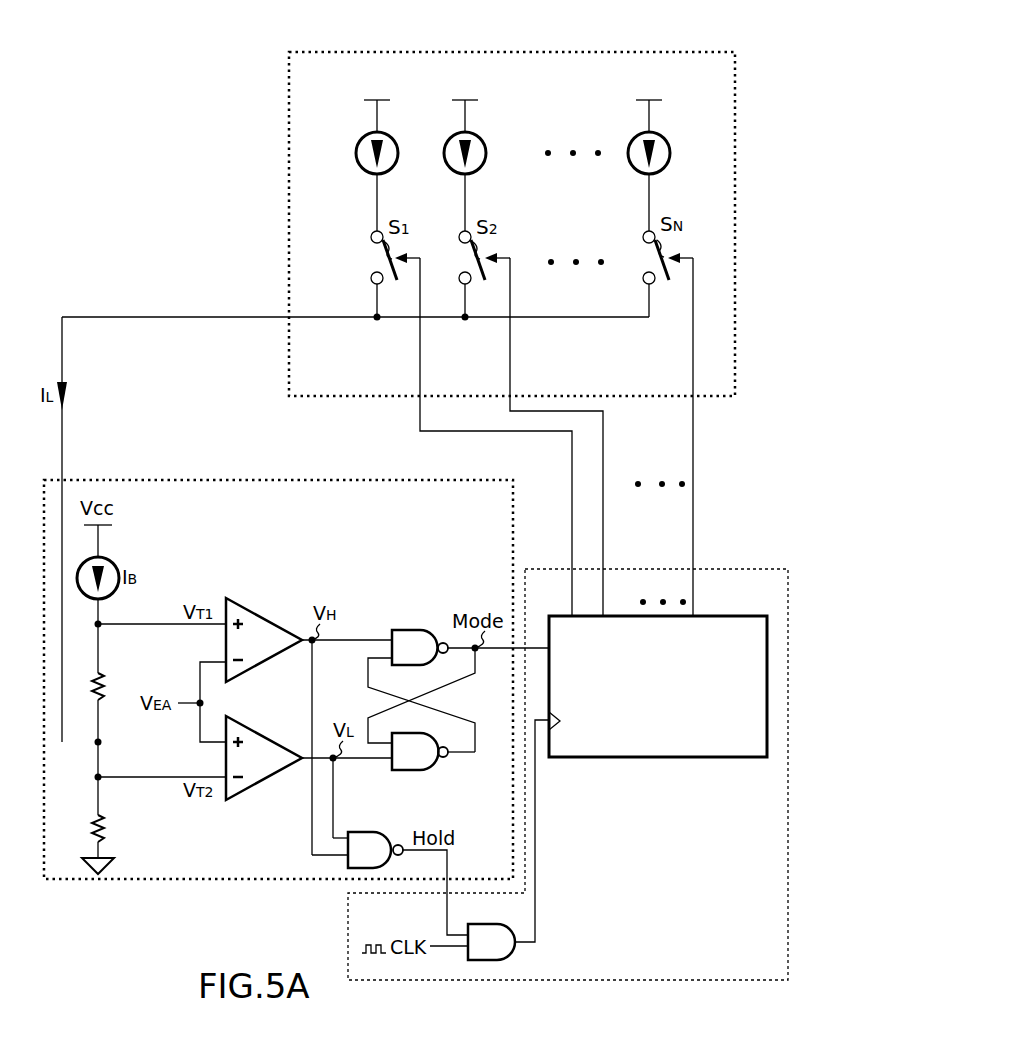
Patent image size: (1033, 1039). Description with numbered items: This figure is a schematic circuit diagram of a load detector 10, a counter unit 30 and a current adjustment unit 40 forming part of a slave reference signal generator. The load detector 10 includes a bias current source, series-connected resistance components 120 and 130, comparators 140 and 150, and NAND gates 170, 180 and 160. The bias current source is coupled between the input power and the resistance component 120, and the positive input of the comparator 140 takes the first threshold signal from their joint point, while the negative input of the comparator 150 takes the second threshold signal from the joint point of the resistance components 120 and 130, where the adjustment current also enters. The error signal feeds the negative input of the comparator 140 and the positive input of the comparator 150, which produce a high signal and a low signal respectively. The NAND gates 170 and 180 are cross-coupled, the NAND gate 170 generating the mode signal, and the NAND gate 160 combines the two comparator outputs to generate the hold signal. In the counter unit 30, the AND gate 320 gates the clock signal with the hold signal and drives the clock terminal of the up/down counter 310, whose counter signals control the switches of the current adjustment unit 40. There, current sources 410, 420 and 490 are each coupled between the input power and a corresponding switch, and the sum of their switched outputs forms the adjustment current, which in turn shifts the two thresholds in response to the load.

The load detector 10 is at (278, 665).
The counter unit 30 is at (568, 760).
The current adjustment unit 40 is at (512, 209).
The resistance component 120 is at (120, 686).
The resistance component 130 is at (120, 828).
The comparator 140 is at (264, 637).
The comparator 150 is at (264, 755).
The NAND gate 160 is at (375, 836).
The NAND gate 170 is at (420, 634).
The NAND gate 180 is at (420, 738).
The up/down counter 310 is at (660, 674).
The AND gate 320 is at (491, 928).
The current source 410 is at (396, 154).
The current source 420 is at (484, 154).
The current source 490 is at (667, 154).